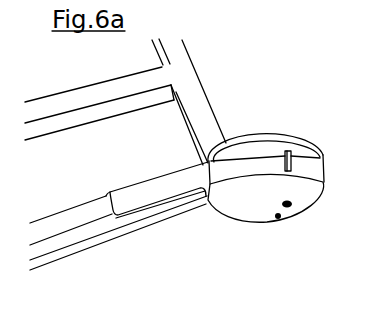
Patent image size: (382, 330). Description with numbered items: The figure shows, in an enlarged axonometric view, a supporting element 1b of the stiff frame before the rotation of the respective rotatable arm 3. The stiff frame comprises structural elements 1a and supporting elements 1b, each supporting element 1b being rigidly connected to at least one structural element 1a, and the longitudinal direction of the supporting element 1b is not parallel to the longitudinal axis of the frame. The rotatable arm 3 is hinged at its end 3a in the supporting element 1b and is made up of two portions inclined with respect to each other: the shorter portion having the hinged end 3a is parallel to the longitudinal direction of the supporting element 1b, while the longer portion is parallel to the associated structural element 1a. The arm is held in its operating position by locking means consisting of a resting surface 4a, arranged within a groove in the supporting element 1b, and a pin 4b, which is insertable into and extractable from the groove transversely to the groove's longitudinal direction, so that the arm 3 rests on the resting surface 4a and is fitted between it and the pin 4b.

The structural element 1a is at (180, 68).
The supporting element 1b is at (255, 124).
The rotatable arm 3 is at (48, 230).
The hinged end 3a is at (161, 193).
The resting surface 4a is at (307, 167).
The pin 4b is at (292, 140).